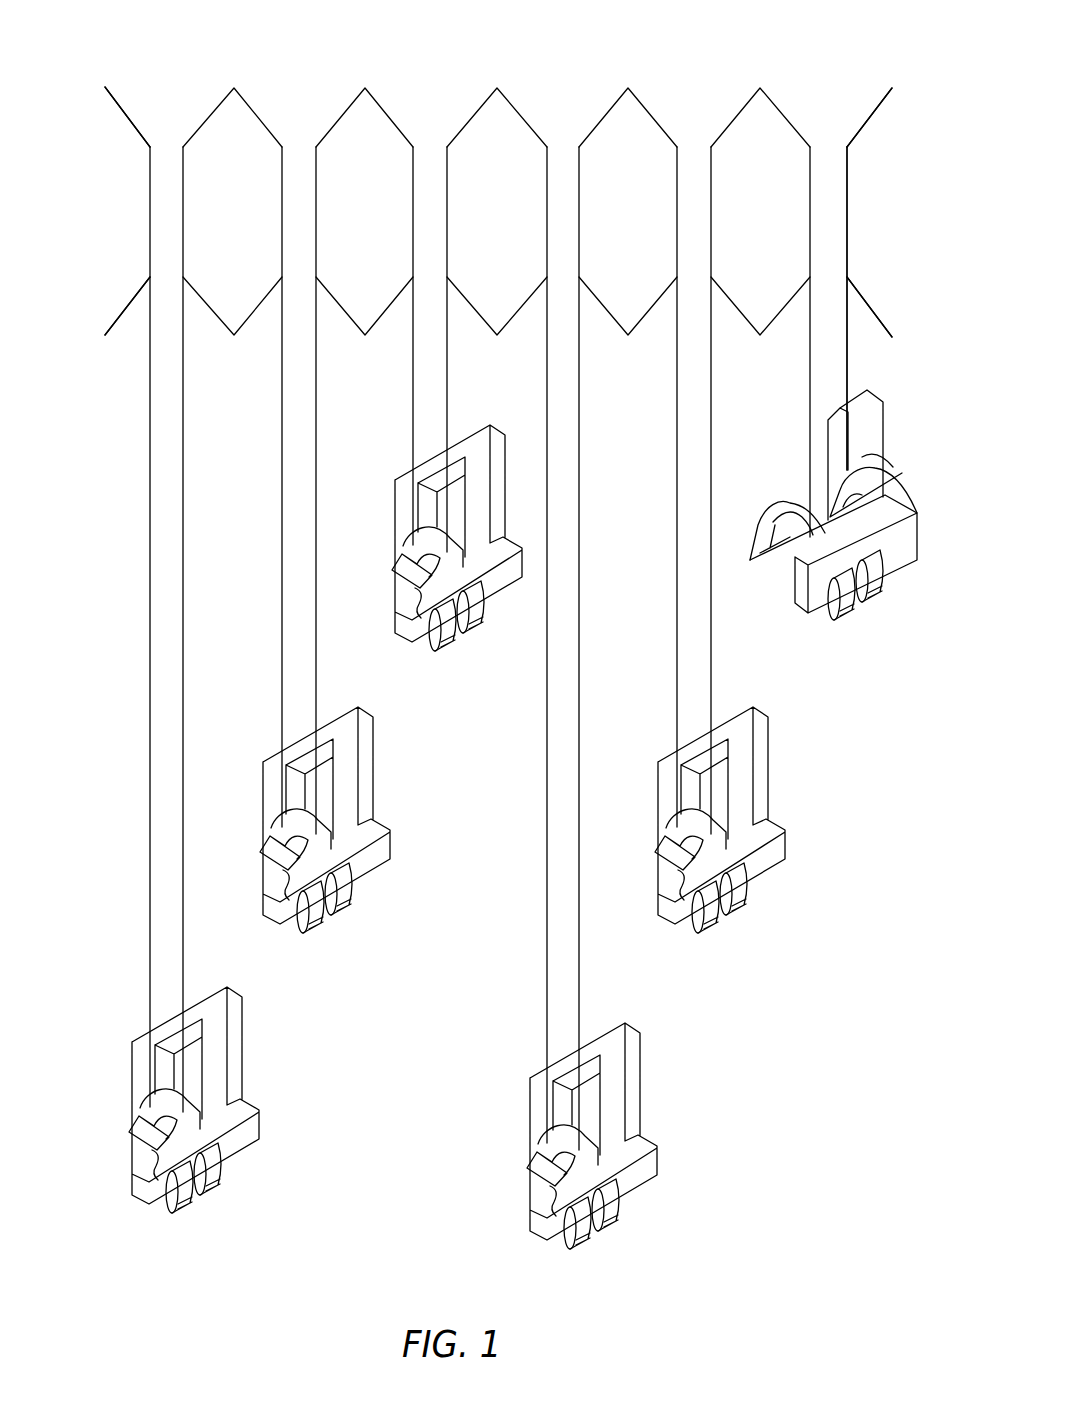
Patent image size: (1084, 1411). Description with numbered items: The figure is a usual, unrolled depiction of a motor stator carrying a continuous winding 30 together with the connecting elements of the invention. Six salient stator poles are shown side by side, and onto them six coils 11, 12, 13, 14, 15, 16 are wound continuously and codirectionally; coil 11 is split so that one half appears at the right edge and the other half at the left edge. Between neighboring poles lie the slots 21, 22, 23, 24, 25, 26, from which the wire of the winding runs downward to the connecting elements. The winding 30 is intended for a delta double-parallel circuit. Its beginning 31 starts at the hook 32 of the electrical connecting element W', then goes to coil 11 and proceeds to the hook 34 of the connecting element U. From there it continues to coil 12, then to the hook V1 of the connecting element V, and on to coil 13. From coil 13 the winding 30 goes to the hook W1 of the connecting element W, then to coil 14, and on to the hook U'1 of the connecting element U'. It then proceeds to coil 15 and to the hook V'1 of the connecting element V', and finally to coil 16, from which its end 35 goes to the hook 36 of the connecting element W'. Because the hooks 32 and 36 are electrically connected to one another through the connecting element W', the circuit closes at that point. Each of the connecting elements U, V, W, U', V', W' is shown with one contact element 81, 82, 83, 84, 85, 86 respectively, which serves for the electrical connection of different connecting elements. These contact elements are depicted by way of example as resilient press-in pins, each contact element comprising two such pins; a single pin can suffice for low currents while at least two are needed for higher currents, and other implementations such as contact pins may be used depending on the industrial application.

The continuous winding 30 is at (512, 38).
The coil 11 is at (117, 240).
The coil 12 is at (250, 240).
The coil 13 is at (382, 240).
The coil 14 is at (514, 240).
The coil 15 is at (644, 240).
The coil 16 is at (775, 240).
The slot 21 is at (168, 160).
The slot 22 is at (300, 160).
The slot 23 is at (431, 160).
The slot 24 is at (564, 160).
The slot 25 is at (695, 160).
The slot 26 is at (829, 160).
The connecting element U is at (165, 1095).
The connecting element V is at (356, 815).
The connecting element W is at (428, 533).
The connecting element U' is at (615, 1131).
The connecting element V' is at (743, 815).
The connecting element W' is at (833, 589).
The hook V1 is at (280, 889).
The hook W1 is at (432, 608).
The hook U'1 is at (511, 1170).
The hook V'1 is at (660, 861).
The hook 34 is at (157, 1180).
The contact element 81 is at (218, 1173).
The contact element 82 is at (347, 900).
The contact element 83 is at (447, 635).
The contact element 84 is at (617, 1210).
The contact element 85 is at (747, 900).
The contact element 86 is at (877, 593).
The beginning of winding 31 is at (845, 353).
The hook 32 is at (806, 597).
The end of winding 35 is at (810, 393).
The hook 36 is at (773, 563).